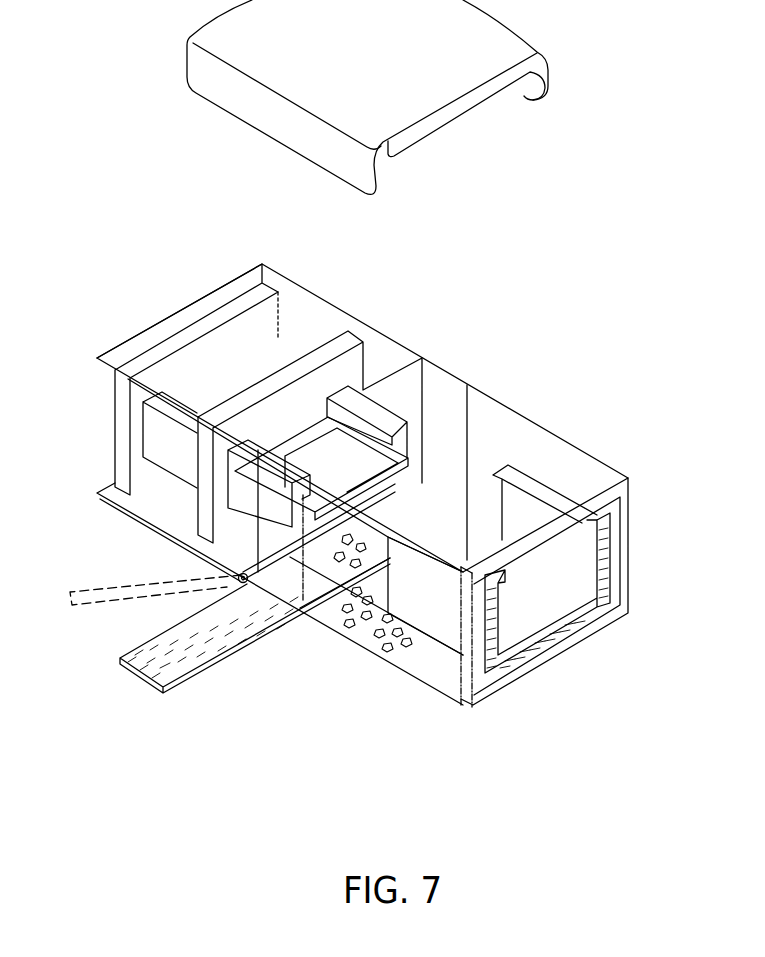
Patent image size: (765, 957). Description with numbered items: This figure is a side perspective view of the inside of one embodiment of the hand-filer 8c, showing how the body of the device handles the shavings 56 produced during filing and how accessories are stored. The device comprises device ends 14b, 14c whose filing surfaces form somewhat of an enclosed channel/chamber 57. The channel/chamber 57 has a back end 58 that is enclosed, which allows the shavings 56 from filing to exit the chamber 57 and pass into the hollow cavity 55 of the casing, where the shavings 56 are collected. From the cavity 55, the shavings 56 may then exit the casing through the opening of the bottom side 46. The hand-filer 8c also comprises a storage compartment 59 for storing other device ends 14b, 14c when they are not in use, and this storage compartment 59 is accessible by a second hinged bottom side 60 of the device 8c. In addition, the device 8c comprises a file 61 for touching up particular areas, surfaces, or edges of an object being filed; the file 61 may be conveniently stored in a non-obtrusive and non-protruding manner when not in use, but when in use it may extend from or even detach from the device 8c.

The hand-filer device 8c is at (466, 326).
The device end 14b is at (228, 310).
The device end 14c is at (342, 343).
The back end 58 is at (392, 530).
The channel/chamber 57 is at (537, 513).
The storage compartment 59 is at (148, 500).
The second hinged bottom side 60 is at (103, 580).
The file 61 is at (138, 675).
The hollow cavity 55 is at (333, 610).
The bottom side 46 is at (365, 637).
The shavings 56 is at (403, 640).